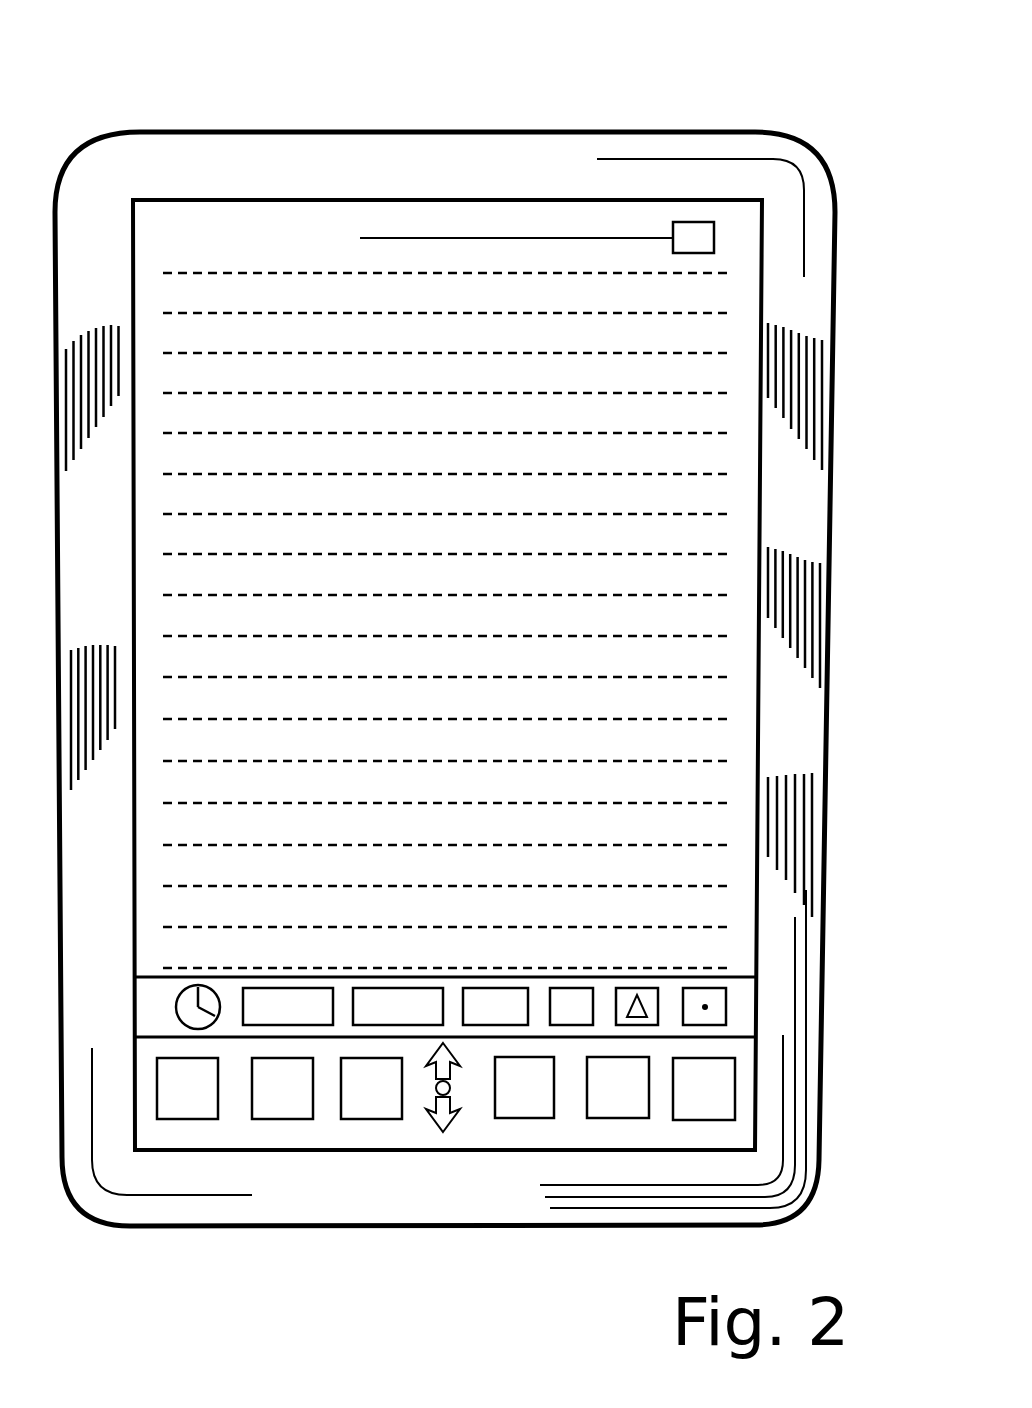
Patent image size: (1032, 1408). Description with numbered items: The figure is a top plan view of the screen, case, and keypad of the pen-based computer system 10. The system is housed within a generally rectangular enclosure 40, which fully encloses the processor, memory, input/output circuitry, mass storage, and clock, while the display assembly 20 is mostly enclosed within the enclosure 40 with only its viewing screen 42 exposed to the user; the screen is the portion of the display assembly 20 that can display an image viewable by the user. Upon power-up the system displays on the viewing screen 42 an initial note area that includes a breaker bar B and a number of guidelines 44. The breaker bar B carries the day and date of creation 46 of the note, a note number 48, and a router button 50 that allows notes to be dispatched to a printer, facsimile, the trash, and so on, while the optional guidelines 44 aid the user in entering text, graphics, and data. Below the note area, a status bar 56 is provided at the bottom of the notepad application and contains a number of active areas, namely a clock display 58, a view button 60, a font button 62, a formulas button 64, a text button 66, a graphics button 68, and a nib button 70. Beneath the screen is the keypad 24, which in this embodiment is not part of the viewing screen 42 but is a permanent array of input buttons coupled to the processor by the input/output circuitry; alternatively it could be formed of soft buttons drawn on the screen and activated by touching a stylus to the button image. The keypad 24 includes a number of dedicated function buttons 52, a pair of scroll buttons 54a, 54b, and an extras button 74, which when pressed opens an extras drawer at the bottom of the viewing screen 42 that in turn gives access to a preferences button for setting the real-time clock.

The pen-based computer system 10 is at (775, 83).
The display assembly 20 is at (658, 575).
The keypad 24 is at (732, 1142).
The enclosure 40 is at (782, 515).
The viewing screen 42 is at (672, 697).
The guidelines 44 is at (693, 432).
The day and date of creation 46 is at (228, 212).
The note number 48 is at (328, 213).
The router button 50 is at (686, 212).
The dedicated function buttons 52 is at (197, 1090).
The scroll button 54a is at (432, 1065).
The scroll button 54b is at (455, 1125).
The status bar 56 is at (743, 1012).
The clock display 58 is at (212, 992).
The view button 60 is at (293, 988).
The font button 62 is at (387, 990).
The formulas button 64 is at (490, 992).
The text button 66 is at (562, 993).
The graphics button 68 is at (630, 993).
The nib button 70 is at (695, 992).
The extras button 74 is at (360, 1110).
The breaker bar B is at (378, 231).